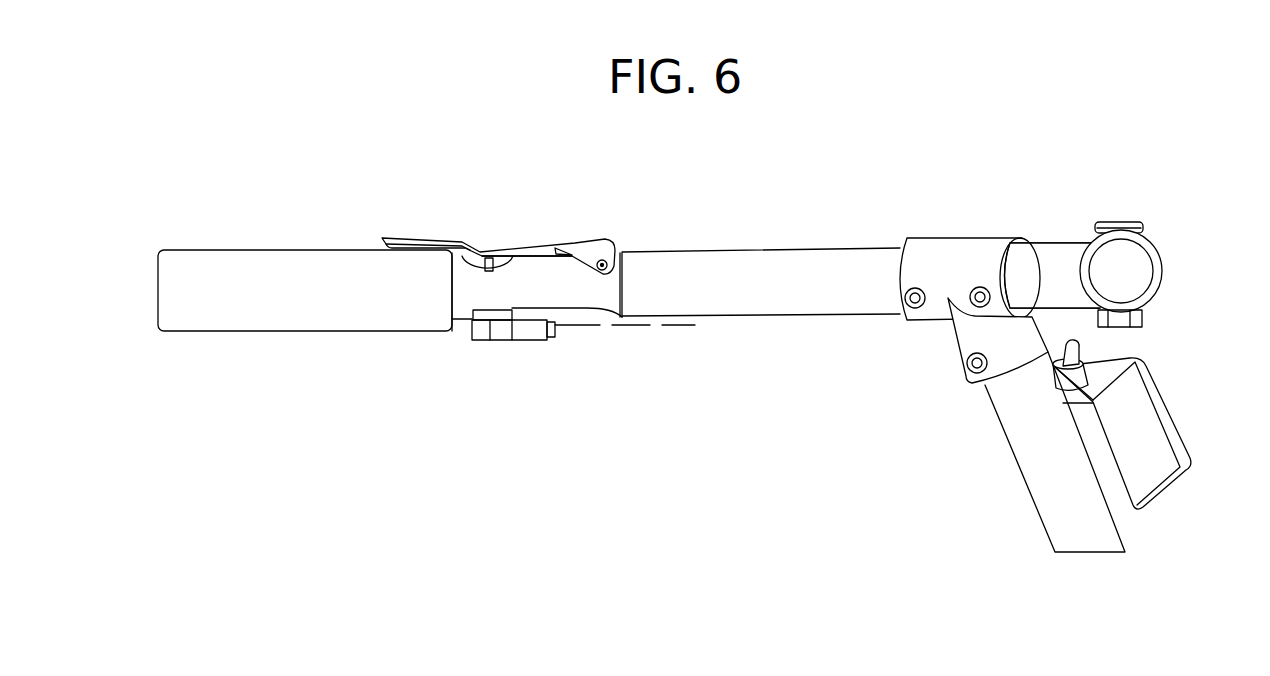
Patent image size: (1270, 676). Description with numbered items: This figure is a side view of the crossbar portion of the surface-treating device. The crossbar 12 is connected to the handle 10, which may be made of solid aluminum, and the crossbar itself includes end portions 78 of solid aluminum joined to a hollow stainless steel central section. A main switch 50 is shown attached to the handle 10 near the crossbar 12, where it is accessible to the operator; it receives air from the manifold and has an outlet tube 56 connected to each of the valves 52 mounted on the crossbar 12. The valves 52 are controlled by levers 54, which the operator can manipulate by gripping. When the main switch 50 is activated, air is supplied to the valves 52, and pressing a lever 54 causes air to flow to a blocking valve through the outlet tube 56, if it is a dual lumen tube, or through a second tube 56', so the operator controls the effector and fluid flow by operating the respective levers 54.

The handle 10 is at (1103, 533).
The crossbar 12 is at (869, 230).
The main switch 50 is at (1143, 410).
The valve 52 is at (497, 341).
The lever 54 is at (427, 236).
The outlet tube 56 is at (974, 336).
The second tube 56' is at (690, 336).
The end portion 78 is at (544, 272).